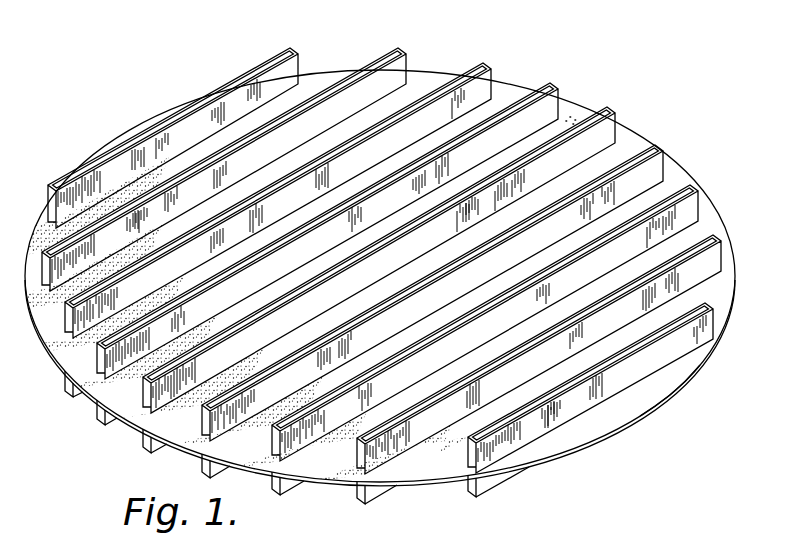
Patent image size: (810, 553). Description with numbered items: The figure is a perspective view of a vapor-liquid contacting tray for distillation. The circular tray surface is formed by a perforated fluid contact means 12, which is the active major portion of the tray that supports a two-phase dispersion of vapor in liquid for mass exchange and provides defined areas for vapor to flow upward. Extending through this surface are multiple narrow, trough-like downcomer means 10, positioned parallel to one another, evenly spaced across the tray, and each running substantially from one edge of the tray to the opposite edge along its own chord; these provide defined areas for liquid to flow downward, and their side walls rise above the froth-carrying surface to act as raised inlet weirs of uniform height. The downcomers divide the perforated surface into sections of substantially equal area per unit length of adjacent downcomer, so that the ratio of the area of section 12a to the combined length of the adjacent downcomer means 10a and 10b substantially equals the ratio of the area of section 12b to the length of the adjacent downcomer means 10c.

The downcomer means 10 is at (496, 71).
The downcomer means 10a is at (557, 97).
The downcomer means 10b is at (605, 112).
The downcomer means 10c is at (708, 318).
The perforated fluid contact means 12 is at (321, 463).
The section of the perforated fluid contact means 12a is at (572, 115).
The section of the perforated fluid contact means 12b is at (663, 388).